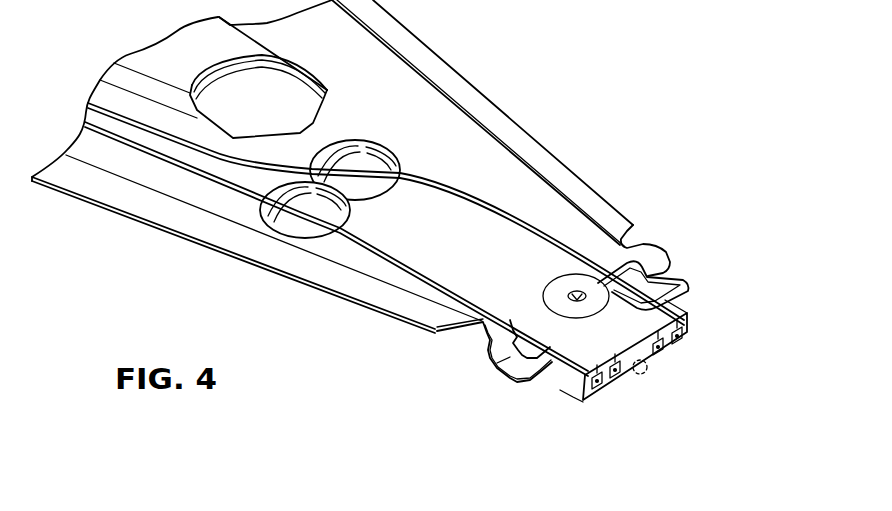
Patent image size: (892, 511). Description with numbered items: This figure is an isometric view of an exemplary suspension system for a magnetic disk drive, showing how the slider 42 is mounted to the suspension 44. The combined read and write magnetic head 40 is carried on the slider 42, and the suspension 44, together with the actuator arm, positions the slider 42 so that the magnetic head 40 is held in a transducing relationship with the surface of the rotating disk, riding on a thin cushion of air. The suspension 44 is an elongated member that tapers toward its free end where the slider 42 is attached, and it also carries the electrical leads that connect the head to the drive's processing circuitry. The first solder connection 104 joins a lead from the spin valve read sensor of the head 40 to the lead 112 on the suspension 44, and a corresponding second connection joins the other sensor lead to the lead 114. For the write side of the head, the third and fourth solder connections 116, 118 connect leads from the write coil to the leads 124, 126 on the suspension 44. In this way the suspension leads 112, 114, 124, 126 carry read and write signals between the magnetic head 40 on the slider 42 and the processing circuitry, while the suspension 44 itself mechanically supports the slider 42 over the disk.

The magnetic head 40 is at (647, 375).
The slider 42 is at (532, 391).
The suspension 44 is at (498, 106).
The first solder connection 104 is at (580, 390).
The lead 112 is at (372, 250).
The lead 114 is at (552, 232).
The third solder connection 116 is at (611, 380).
The fourth solder connection 118 is at (661, 352).
The lead 124 is at (420, 263).
The lead 126 is at (474, 208).